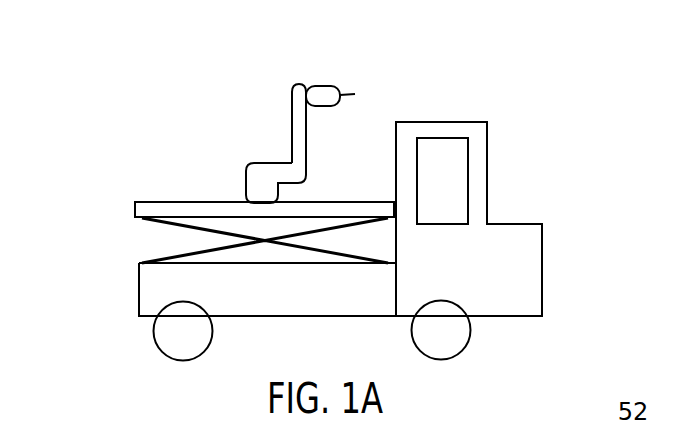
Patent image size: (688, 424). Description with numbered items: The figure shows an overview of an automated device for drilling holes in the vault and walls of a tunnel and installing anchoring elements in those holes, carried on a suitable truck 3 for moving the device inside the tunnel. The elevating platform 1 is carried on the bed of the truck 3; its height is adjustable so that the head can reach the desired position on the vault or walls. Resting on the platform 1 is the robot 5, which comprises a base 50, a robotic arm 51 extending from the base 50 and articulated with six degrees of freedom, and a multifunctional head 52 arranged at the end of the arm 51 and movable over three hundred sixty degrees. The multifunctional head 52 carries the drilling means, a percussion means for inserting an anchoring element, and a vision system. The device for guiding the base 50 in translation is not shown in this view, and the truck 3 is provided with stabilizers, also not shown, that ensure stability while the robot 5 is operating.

The elevating platform 1 is at (134, 238).
The truck 3 is at (547, 224).
The robot 5 is at (269, 103).
The base 50 is at (246, 182).
The robotic arm 51 is at (292, 128).
The multifunctional head 52 is at (332, 86).